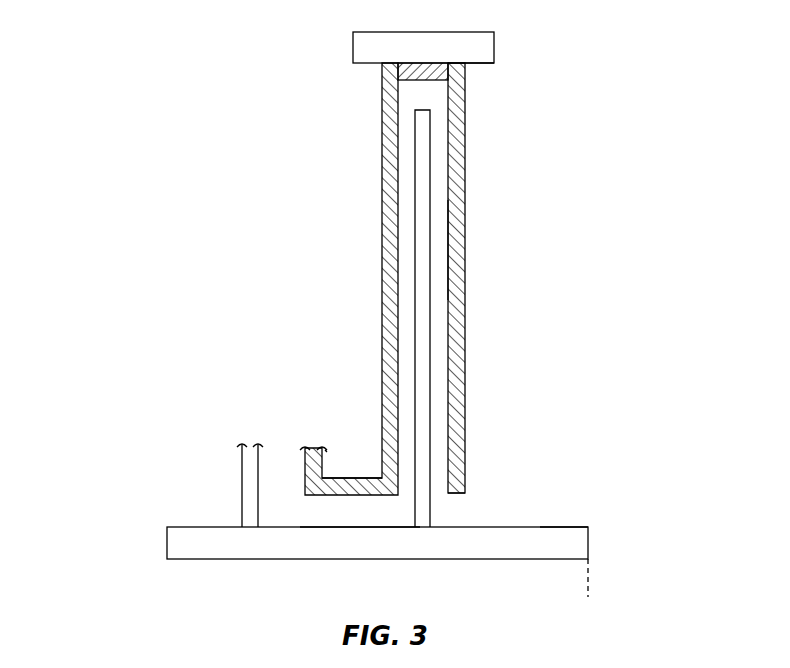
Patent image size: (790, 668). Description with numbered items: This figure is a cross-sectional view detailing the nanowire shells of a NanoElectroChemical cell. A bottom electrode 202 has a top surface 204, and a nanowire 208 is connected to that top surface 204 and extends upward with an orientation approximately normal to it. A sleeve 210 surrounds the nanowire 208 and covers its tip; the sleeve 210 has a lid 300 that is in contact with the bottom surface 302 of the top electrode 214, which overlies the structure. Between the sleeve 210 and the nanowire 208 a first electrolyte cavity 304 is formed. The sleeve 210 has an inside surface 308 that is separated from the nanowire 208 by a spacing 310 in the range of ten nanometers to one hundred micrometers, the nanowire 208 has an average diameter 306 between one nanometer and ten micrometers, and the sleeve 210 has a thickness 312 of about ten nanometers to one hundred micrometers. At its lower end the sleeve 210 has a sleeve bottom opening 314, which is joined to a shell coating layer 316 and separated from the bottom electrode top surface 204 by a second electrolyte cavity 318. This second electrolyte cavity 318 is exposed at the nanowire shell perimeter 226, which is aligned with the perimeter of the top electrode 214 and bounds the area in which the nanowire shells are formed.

The bottom electrode 202 is at (588, 545).
The top surface 204 is at (582, 518).
The nanowire 208 is at (430, 207).
The sleeve 210 is at (465, 168).
The top electrode 214 is at (468, 32).
The perimeter 226 is at (588, 585).
The lid 300 is at (415, 85).
The bottom surface 302 is at (484, 68).
The first electrolyte cavity 304 is at (438, 240).
The average diameter 306 is at (318, 365).
The inside surface 308 is at (444, 282).
The spacing 310 is at (318, 338).
The thickness 312 is at (318, 393).
The sleeve bottom opening 314 is at (445, 502).
The shell coating layer 316 is at (350, 475).
The second electrolyte cavity 318 is at (355, 510).